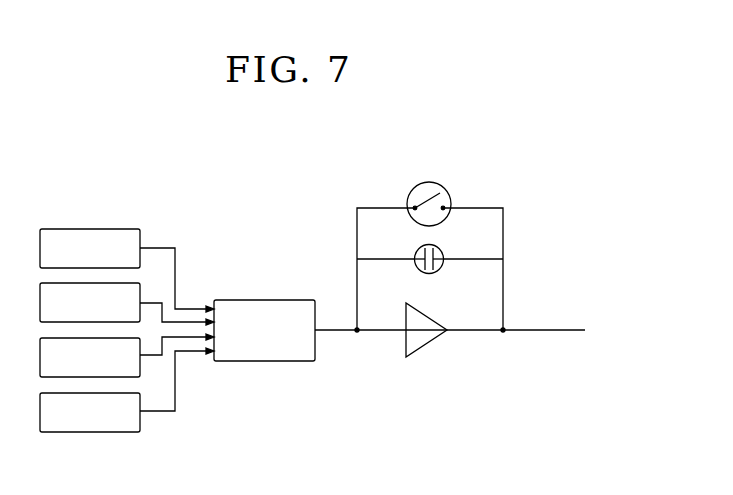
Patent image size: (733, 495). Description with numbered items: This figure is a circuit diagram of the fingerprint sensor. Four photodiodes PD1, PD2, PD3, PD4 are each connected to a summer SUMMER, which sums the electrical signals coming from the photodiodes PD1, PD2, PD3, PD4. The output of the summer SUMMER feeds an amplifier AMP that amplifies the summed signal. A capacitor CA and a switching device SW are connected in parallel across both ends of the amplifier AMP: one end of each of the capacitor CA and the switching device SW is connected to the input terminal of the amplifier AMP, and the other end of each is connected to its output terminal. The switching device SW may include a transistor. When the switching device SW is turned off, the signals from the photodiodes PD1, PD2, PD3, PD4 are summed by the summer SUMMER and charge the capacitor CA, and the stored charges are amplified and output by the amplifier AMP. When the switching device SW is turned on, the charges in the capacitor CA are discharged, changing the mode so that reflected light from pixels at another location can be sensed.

The photodiode PD1 is at (127, 270).
The photodiode PD2 is at (127, 304).
The photodiode PD3 is at (127, 355).
The photodiode PD4 is at (127, 390).
The summer SUMMER is at (264, 330).
The switching device SW is at (428, 182).
The capacitor CA is at (440, 248).
The amplifier AMP is at (428, 345).